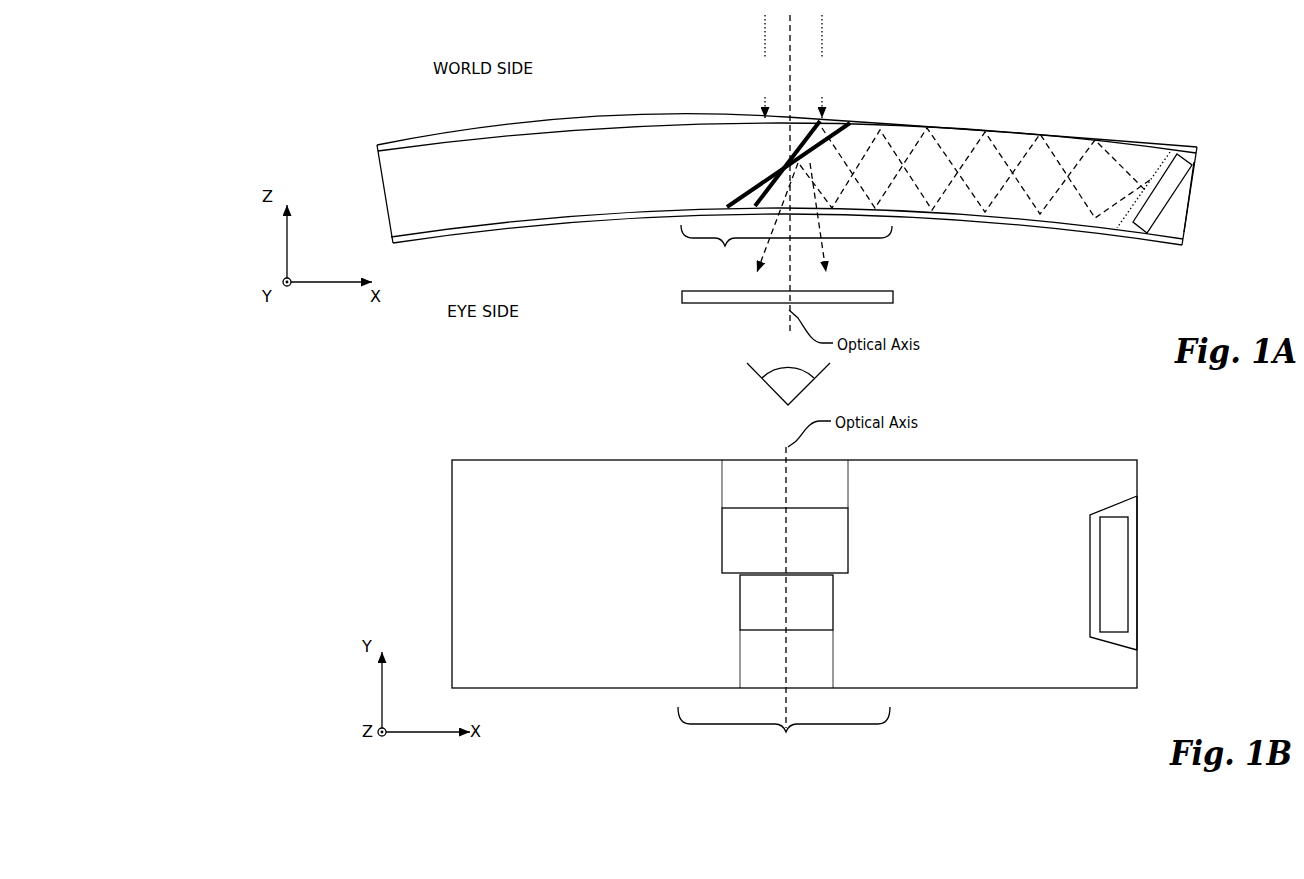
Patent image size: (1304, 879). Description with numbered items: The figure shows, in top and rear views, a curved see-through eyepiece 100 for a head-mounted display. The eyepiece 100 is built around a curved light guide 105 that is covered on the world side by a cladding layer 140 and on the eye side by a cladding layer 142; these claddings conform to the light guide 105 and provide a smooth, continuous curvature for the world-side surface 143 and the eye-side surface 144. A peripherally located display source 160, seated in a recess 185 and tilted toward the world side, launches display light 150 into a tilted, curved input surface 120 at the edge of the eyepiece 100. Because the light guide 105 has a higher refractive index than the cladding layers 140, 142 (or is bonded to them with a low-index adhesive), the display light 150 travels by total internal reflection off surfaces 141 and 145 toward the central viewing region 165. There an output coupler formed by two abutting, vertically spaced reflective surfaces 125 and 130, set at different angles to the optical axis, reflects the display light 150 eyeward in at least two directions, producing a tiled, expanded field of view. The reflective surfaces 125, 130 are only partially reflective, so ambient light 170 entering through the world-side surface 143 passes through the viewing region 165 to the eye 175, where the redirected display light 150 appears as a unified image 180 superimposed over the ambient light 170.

In FIG. 1A, the see-through eyepiece 100 is at (1214, 79).
In FIG. 1B, the see-through eyepiece 100 is at (372, 445).
In FIG. 1A, the curved light guide 105 is at (491, 193).
In FIG. 1B, the curved light guide 105 is at (614, 585).
In FIG. 1A, the input surface 120 is at (1174, 151).
In FIG. 1B, the input surface 120 is at (1095, 560).
In FIG. 1A, the reflective surface 125 is at (740, 198).
In FIG. 1B, the reflective surface 125 is at (823, 550).
In FIG. 1A, the reflective surface 130 is at (800, 131).
In FIG. 1B, the reflective surface 130 is at (781, 616).
In FIG. 1A, the cladding layer 140 is at (553, 128).
In FIG. 1A, the surface 141 is at (499, 150).
In FIG. 1A, the cladding layer 142 is at (958, 221).
In FIG. 1A, the world-side surface 143 is at (971, 119).
In FIG. 1A, the eye-side surface 144 is at (628, 222).
In FIG. 1A, the surface 145 is at (546, 217).
In FIG. 1A, the display light 150 is at (1058, 198).
In FIG. 1A, the display source 160 is at (1184, 210).
In FIG. 1B, the display source 160 is at (1128, 581).
In FIG. 1A, the viewing region 165 is at (786, 250).
In FIG. 1B, the viewing region 165 is at (784, 732).
In FIG. 1A, the ambient light 170 is at (794, 66).
In FIG. 1A, the eye 175 is at (801, 366).
In FIG. 1A, the unified image 180 is at (896, 297).
In FIG. 1A, the recess 185 is at (1188, 190).
In FIG. 1B, the recess 185 is at (1127, 510).